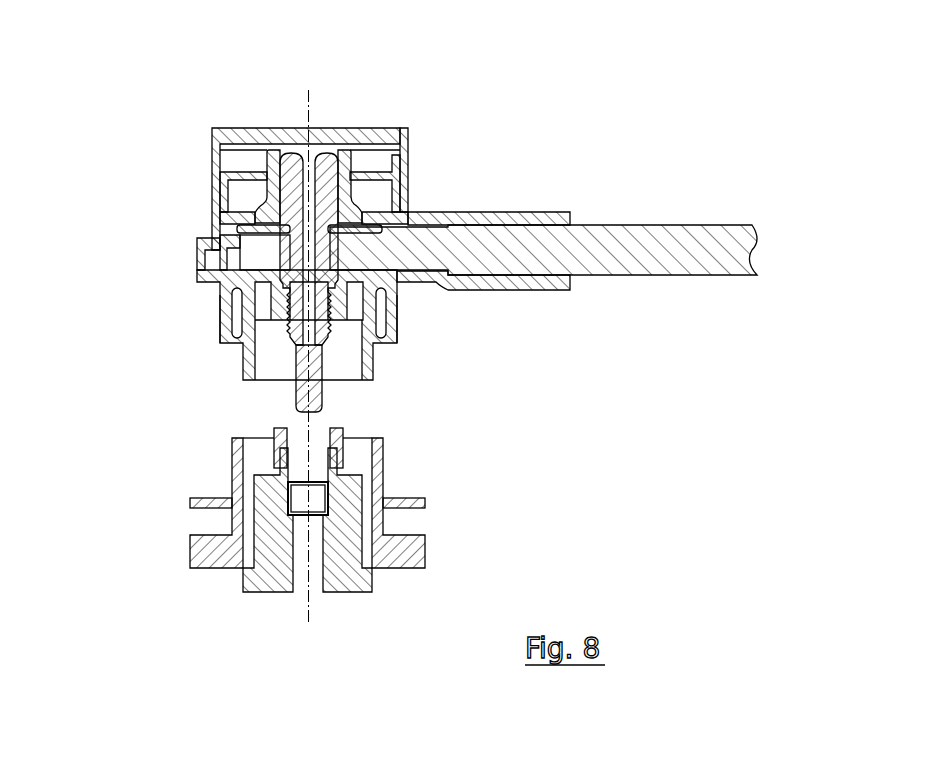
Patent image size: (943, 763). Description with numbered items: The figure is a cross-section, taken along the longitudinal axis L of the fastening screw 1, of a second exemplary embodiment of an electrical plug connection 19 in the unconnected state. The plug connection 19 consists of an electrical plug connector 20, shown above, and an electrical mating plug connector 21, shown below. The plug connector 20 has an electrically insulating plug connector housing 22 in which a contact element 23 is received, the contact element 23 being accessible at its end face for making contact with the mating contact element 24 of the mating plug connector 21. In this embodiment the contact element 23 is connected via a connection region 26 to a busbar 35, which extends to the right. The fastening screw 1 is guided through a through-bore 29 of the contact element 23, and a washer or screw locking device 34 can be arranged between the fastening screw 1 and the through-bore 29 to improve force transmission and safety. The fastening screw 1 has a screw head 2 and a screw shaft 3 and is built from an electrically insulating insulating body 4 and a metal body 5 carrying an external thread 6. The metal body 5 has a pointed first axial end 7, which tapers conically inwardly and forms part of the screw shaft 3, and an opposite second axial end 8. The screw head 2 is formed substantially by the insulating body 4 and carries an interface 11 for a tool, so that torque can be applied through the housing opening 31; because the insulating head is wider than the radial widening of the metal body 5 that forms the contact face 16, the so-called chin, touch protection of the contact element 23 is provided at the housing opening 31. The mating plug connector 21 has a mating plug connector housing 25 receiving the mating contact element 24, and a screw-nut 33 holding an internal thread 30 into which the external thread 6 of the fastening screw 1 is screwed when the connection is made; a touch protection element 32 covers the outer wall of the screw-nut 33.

The electrical plug connection 19 is at (434, 344).
The electrical plug connector 20 is at (113, 205).
The electrical mating plug connector 21 is at (113, 513).
The fastening screw 1 is at (337, 138).
The screw head 2 is at (210, 183).
The plug connector housing 22 is at (400, 127).
The housing opening 31 is at (245, 128).
The interface 11 is at (358, 165).
The metal body 5 is at (252, 211).
The screw locking device 34 is at (412, 192).
The second axial end 8 is at (263, 140).
The insulating body 4 is at (305, 140).
The first axial end 7 is at (330, 350).
The contact face 16 is at (247, 236).
The screw shaft 3 is at (217, 338).
The external thread 6 is at (220, 305).
The through-bore 29 is at (220, 317).
The contact element 23 is at (402, 313).
The connection region 26 is at (488, 205).
The busbar 35 is at (750, 246).
The touch protection element 32 is at (342, 455).
The screw-nut 33 is at (287, 592).
The internal thread 30 is at (335, 500).
The mating contact element 24 is at (230, 560).
The mating plug connector housing 25 is at (383, 527).
The longitudinal axis L is at (308, 613).